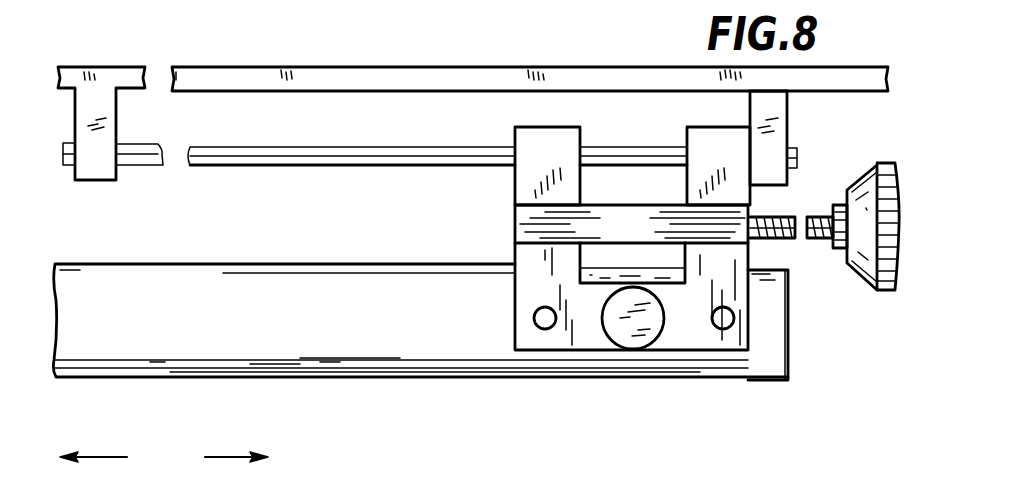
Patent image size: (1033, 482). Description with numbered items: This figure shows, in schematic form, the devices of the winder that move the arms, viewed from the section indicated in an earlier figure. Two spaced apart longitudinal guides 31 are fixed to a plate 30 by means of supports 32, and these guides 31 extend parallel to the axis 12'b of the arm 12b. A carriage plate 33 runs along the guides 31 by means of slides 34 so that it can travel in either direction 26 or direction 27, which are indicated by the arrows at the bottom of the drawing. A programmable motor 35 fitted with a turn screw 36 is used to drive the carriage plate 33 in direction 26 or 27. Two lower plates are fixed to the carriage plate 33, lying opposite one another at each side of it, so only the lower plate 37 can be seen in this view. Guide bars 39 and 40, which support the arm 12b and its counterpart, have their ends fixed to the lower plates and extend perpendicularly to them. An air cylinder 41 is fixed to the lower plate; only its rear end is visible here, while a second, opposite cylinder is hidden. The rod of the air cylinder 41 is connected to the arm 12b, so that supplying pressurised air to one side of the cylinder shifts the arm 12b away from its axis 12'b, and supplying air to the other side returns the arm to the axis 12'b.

The arm 12b is at (300, 350).
The axis 12'b is at (810, 325).
The direction 26 is at (206, 455).
The direction 27 is at (114, 452).
The plate 30 is at (448, 40).
The longitudinal guides 31 is at (278, 151).
The supports 32 is at (107, 133).
The carriage plate 33 is at (523, 233).
The slides 34 is at (571, 146).
The programmable motor 35 is at (885, 163).
The turn screw 36 is at (797, 240).
The lower plate 37 is at (593, 334).
The guide bar 39 is at (548, 326).
The guide bar 40 is at (723, 327).
The air cylinder 41 is at (636, 338).